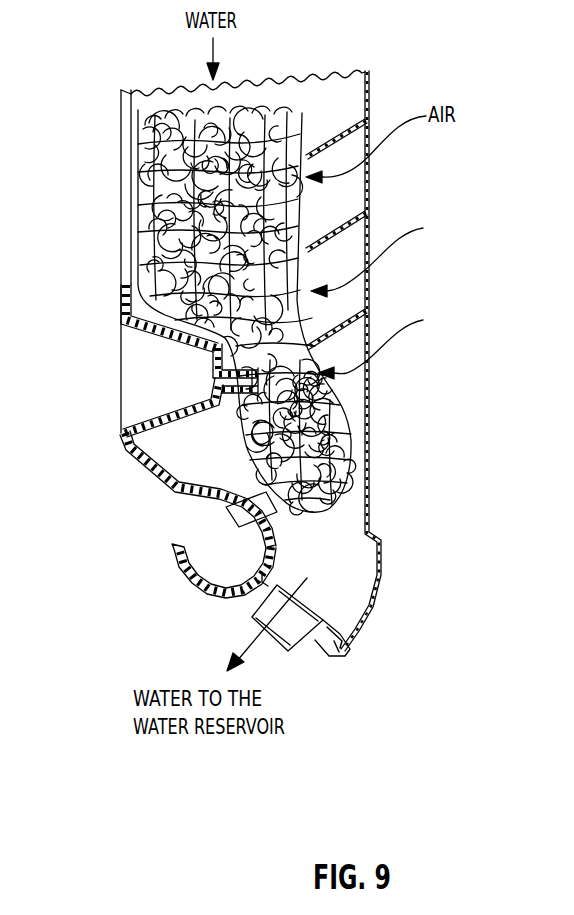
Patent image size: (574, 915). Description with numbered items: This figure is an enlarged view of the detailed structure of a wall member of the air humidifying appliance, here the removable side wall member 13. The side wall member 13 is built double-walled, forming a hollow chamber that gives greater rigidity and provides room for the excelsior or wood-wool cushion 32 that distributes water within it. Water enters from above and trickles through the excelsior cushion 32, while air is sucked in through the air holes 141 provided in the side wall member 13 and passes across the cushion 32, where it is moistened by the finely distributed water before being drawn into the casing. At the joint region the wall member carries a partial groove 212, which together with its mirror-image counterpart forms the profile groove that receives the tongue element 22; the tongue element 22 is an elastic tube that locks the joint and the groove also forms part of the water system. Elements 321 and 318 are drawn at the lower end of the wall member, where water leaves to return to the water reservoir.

The side wall member 13 is at (370, 440).
The air holes 141 is at (370, 345).
The excelsior cushion 32 is at (140, 173).
The funnel neck 321 is at (213, 385).
The partial groove 212 is at (279, 548).
The tongue element 22 is at (177, 562).
The water outlet spout 318 is at (302, 636).